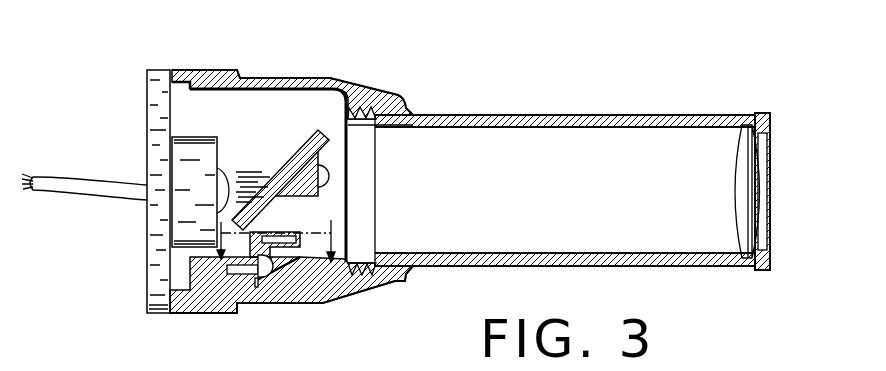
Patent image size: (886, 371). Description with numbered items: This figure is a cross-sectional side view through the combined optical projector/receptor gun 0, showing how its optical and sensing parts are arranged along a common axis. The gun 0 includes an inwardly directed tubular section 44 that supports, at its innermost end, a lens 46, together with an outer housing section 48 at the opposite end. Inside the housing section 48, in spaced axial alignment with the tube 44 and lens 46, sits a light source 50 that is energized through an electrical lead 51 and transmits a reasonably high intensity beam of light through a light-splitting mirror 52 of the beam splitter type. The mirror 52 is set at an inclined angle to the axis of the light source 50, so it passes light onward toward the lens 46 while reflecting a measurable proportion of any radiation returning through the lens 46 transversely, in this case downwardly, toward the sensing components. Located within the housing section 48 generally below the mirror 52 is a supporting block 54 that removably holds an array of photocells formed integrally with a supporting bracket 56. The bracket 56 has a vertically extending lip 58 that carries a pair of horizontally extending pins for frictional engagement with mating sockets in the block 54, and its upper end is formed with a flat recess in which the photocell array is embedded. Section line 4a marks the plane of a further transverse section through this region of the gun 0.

The combined optical projector/receptor gun 0 is at (470, 118).
The tubular section 44 is at (572, 118).
The lens 46 is at (758, 192).
The outer housing section 48 is at (303, 82).
The light source 50 is at (231, 166).
The electrical lead 51 is at (110, 188).
The light-splitting mirror 52 is at (298, 160).
The supporting block 54 is at (213, 280).
The supporting bracket 56 is at (297, 258).
The vertically extending lip 58 is at (254, 284).
The section line 4a- 4a is at (276, 246).